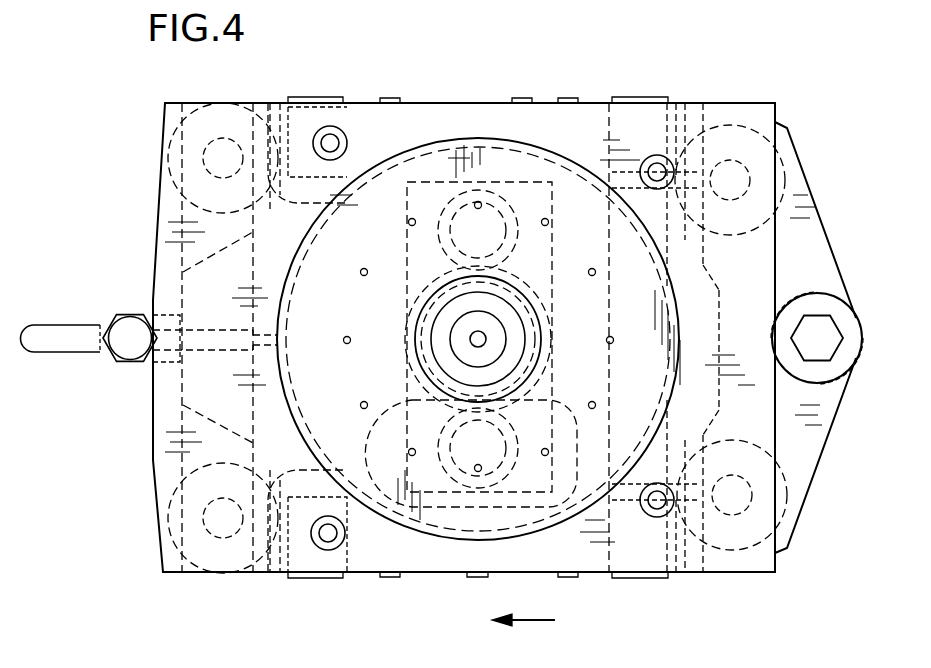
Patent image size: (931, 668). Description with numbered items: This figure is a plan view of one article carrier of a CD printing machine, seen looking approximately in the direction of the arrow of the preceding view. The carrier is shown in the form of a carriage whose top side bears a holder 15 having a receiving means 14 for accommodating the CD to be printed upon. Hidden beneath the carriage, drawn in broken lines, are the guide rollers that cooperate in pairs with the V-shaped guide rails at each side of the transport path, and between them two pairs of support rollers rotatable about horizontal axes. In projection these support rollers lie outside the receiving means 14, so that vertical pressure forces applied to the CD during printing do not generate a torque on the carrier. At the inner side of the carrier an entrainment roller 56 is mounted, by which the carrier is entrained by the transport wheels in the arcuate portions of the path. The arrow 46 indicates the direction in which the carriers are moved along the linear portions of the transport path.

The receiving means 14 is at (452, 532).
The holder 15 is at (786, 232).
The arrow 46 is at (530, 622).
The entrainment rollers 56 is at (820, 295).